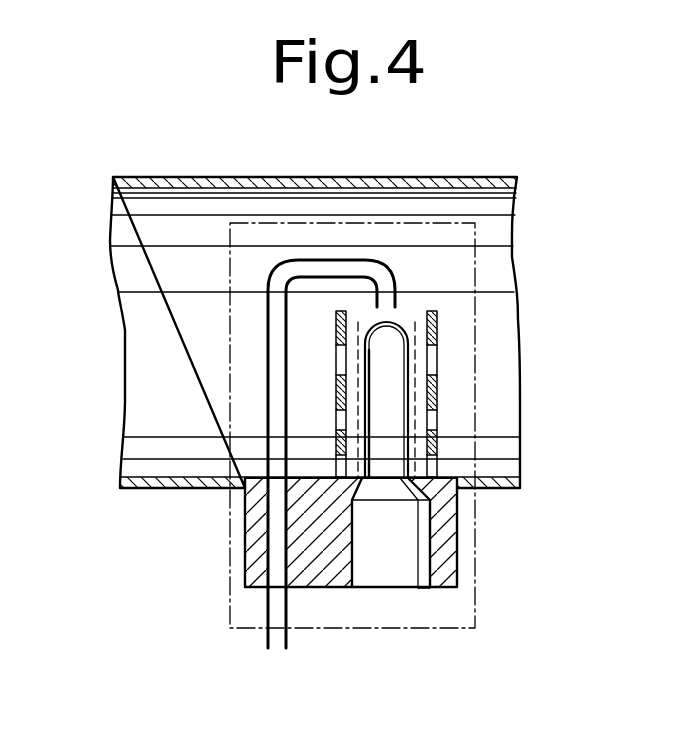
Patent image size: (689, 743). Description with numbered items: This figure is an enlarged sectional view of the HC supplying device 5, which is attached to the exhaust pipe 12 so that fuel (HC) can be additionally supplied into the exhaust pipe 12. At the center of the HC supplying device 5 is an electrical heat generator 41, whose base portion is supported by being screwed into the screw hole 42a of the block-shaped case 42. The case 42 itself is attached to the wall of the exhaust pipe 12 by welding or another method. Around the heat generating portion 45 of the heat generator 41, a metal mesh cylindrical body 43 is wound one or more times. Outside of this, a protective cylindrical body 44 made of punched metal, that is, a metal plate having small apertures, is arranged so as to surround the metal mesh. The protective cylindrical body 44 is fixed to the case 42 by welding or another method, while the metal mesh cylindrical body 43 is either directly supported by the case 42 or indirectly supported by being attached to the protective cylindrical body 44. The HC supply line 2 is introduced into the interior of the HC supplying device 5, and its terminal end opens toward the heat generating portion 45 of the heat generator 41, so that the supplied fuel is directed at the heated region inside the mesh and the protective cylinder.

The HC supply line 2 is at (280, 637).
The HC supplying device 5 is at (364, 222).
The exhaust pipe 12 is at (137, 234).
The electrical heat generator 41 is at (390, 555).
The block-shaped case 42 is at (447, 537).
The screw hole 42a is at (431, 557).
The metal mesh cylindrical body 43 is at (417, 358).
The protective cylindrical body 44 is at (437, 317).
The heat generating portion 45 is at (388, 423).